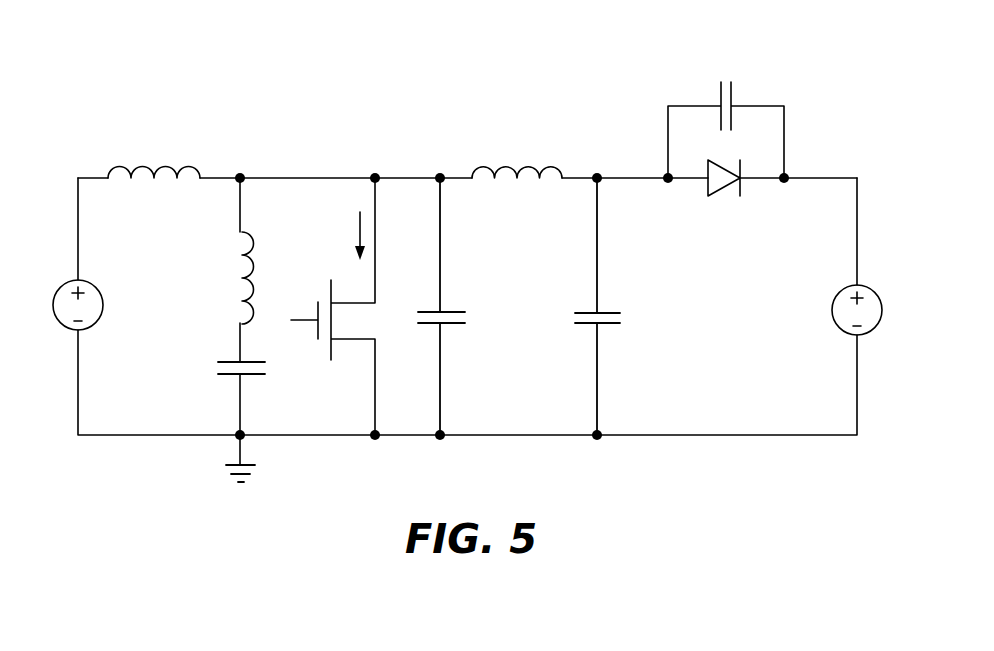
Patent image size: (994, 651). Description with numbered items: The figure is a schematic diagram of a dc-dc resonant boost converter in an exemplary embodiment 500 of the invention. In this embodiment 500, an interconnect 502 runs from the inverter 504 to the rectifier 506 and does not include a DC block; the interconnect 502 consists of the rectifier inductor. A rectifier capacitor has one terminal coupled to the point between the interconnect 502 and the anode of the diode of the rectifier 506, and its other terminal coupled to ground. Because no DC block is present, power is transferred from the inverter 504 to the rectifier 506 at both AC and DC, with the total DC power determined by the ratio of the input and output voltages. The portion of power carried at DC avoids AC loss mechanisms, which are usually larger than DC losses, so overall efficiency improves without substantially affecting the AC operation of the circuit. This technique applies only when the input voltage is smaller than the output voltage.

The dc-dc resonant boost converter embodiment 500 is at (434, 49).
The interconnect 502 is at (517, 175).
The inverter 504 is at (227, 330).
The rectifier 506 is at (741, 136).